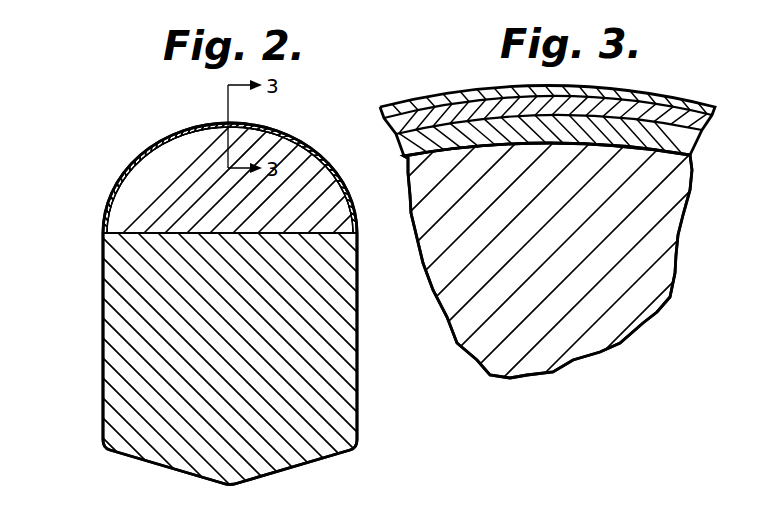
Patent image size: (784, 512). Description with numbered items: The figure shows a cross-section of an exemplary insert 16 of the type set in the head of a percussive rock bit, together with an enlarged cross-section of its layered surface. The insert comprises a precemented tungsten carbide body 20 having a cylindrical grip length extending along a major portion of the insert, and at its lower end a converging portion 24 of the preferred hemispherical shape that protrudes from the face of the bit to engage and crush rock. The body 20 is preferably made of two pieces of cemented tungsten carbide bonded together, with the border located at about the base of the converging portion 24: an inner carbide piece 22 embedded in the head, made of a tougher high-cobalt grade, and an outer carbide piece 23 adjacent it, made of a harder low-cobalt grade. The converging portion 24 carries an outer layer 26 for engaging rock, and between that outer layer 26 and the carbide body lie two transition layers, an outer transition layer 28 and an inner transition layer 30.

In FIG. 2, the insert 16 is at (115, 167).
In FIG. 3, the insert 16 is at (702, 180).
In FIG. 2, the precemented tungsten carbide body 20 is at (155, 270).
In FIG. 2, the inner carbide piece 22 is at (332, 383).
In FIG. 2, the outer carbide piece 23 is at (297, 173).
In FIG. 3, the outer carbide piece 23 is at (480, 242).
In FIG. 2, the converging portion 24 is at (163, 207).
In FIG. 3, the converging portion 24 is at (642, 272).
In FIG. 2, the outer layer 26 is at (285, 133).
In FIG. 3, the outer layer 26 is at (633, 97).
In FIG. 2, the outer transition layer 28 is at (230, 178).
In FIG. 3, the outer transition layer 28 is at (630, 110).
In FIG. 2, the inner transition layer 30 is at (230, 178).
In FIG. 3, the inner transition layer 30 is at (643, 133).